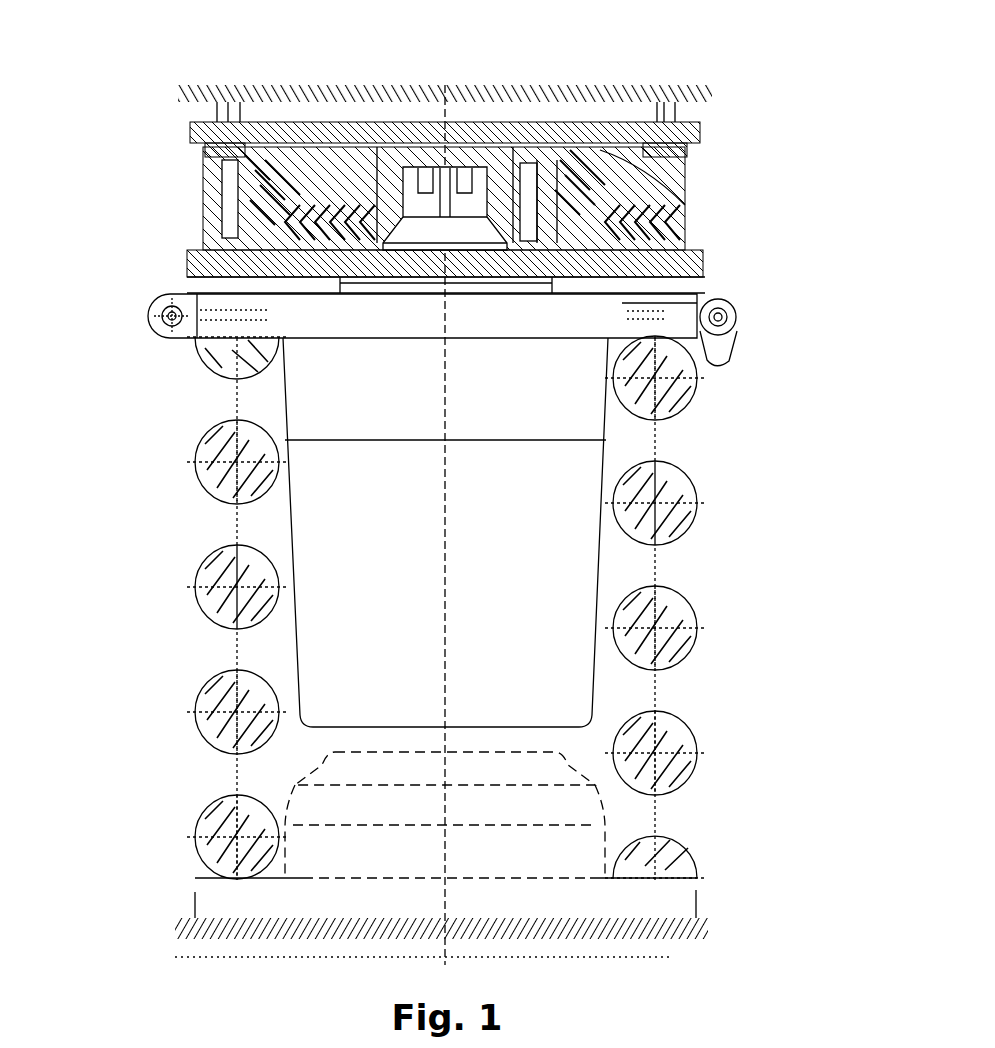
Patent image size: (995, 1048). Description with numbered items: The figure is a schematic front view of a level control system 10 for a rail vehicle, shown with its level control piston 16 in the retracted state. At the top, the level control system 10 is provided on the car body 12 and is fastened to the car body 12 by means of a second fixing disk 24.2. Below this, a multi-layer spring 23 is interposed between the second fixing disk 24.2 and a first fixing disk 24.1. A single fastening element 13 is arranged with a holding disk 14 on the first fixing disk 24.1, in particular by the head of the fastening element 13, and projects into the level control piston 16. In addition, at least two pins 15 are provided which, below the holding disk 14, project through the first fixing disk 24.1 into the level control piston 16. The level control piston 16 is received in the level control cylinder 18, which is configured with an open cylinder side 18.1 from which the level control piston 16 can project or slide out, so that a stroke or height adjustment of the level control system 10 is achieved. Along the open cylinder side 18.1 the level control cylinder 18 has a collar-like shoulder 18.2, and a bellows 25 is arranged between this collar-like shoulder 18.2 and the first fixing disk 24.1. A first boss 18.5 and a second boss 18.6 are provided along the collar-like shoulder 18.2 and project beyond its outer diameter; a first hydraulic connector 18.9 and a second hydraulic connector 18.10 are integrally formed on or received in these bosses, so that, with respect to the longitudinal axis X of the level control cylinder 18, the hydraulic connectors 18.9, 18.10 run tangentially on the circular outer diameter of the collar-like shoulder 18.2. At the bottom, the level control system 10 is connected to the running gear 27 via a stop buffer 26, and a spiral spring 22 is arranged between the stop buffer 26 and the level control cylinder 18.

The level control system 10 is at (111, 26).
The car body 12 is at (646, 81).
The fastening element 13 is at (489, 222).
The holding disk 14 is at (508, 235).
The multi-layer spring 23 is at (598, 170).
The pins 15 is at (642, 205).
The first fixing disk 24.1 is at (203, 235).
The second fixing disk 24.2 is at (196, 130).
The bellows 25 is at (187, 270).
The level control piston 16 is at (373, 283).
The level control cylinder 18 is at (562, 428).
The open cylinder side 18.1 is at (700, 259).
The collar-like shoulder 18.2 is at (625, 328).
The first boss 18.5 is at (150, 312).
The first hydraulic connector 18.9 is at (104, 333).
The second boss 18.6 is at (740, 322).
The second hydraulic connector 18.10 is at (784, 351).
The spiral spring 22 is at (205, 683).
The stop buffer 26 is at (610, 830).
The running gear 27 is at (673, 950).
The longitudinal axis X is at (443, 505).